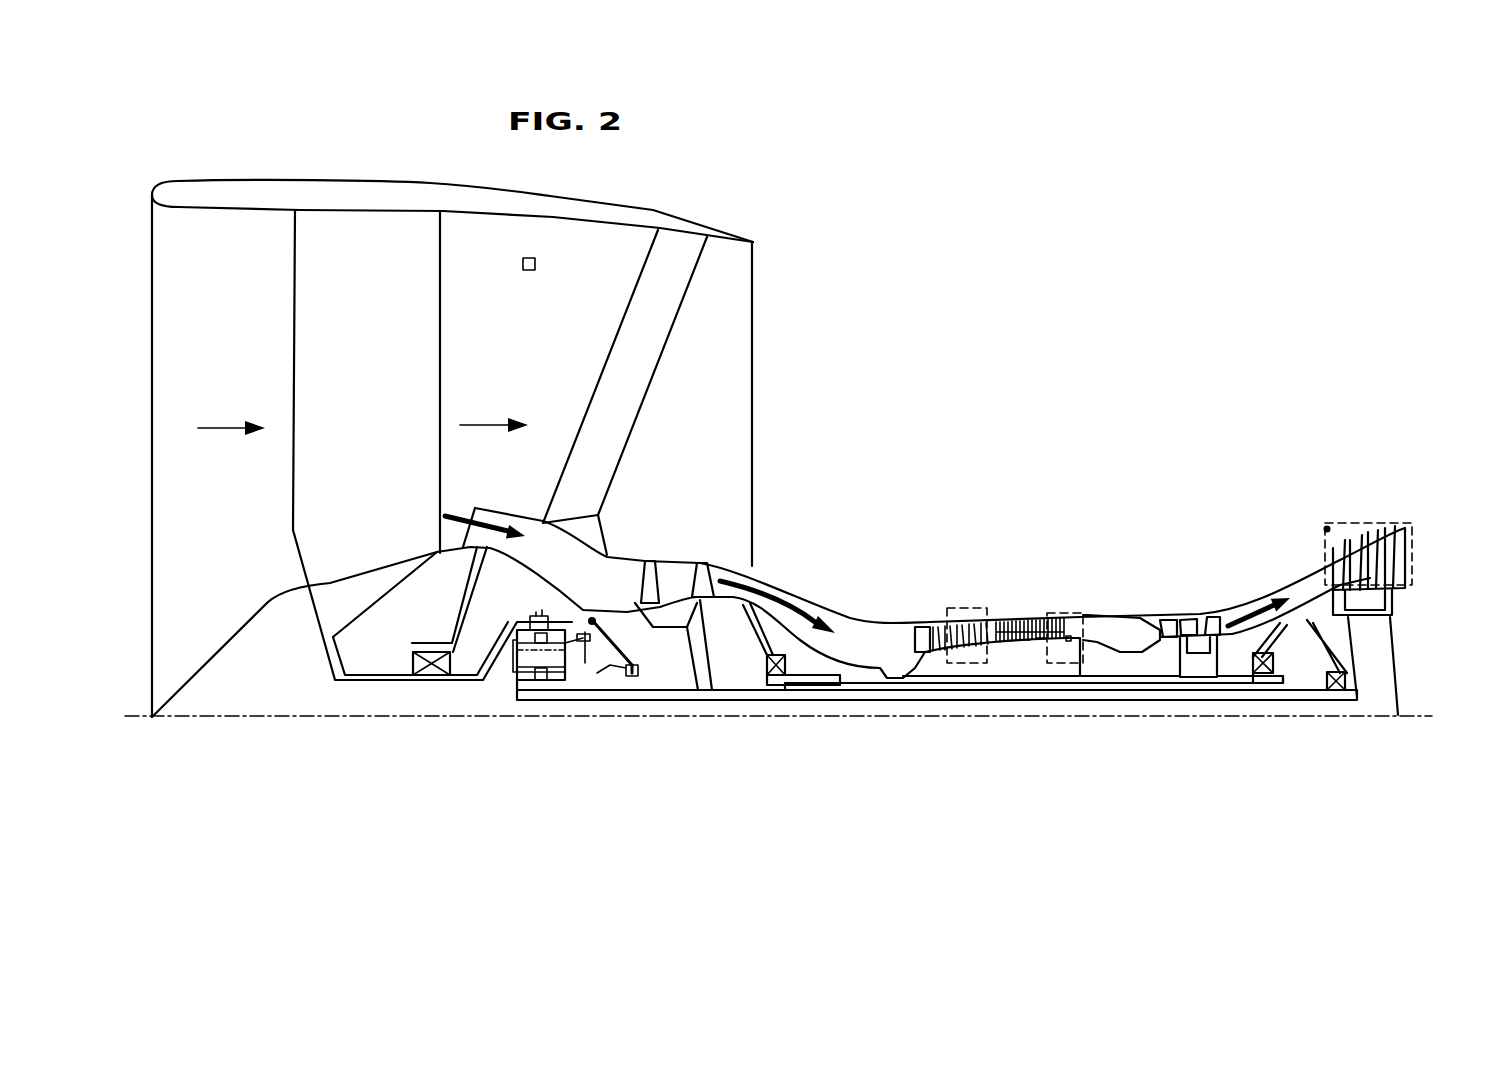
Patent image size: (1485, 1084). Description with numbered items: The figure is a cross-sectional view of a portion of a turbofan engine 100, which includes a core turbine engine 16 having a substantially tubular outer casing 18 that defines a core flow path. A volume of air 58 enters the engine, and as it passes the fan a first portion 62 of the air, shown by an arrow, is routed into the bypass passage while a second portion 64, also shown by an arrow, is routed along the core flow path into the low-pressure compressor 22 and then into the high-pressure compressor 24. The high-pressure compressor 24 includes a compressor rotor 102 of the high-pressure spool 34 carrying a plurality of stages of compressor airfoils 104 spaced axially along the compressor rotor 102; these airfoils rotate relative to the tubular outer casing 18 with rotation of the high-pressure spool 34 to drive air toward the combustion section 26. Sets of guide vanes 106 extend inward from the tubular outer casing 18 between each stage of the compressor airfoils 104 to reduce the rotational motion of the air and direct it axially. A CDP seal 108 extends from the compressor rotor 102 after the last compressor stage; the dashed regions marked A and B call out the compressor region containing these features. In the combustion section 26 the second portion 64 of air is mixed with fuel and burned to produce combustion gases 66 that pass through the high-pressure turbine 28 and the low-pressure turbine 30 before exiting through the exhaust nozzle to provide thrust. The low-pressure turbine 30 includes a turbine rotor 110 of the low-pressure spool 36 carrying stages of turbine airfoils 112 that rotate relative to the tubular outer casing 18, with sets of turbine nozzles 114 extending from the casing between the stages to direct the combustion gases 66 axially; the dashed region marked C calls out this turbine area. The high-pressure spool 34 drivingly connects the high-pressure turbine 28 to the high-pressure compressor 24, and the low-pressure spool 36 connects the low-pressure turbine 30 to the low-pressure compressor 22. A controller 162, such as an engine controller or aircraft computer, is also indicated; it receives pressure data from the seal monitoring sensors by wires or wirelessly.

The turbofan engine 100 is at (296, 128).
The core turbine engine 16 is at (794, 474).
The controller 162 is at (536, 257).
The volume of air 58 is at (222, 430).
The first portion of air 62 is at (480, 427).
The second portion of air 64 is at (453, 518).
The low-pressure compressor 22 is at (712, 548).
The tubular outer casing 18 is at (790, 588).
The high-pressure spool 34 is at (882, 660).
The high-pressure compressor 24 is at (1050, 608).
The compressor airfoils 104 is at (1012, 640).
The detail region A is at (1068, 612).
The detail region B is at (960, 607).
The guide vanes 106 is at (1028, 650).
The compressor rotor 102 is at (1040, 650).
The CDP seal 108 is at (1055, 655).
The low-pressure spool 36 is at (962, 700).
The combustion section 26 is at (1125, 633).
The high-pressure turbine 28 is at (1228, 603).
The combustion gases 66 is at (1232, 627).
The detail region C is at (1327, 529).
The low-pressure turbine 30 is at (1408, 524).
The turbine airfoils 112 is at (1350, 588).
The turbine nozzles 114 is at (1385, 620).
The turbine rotor 110 is at (1358, 670).